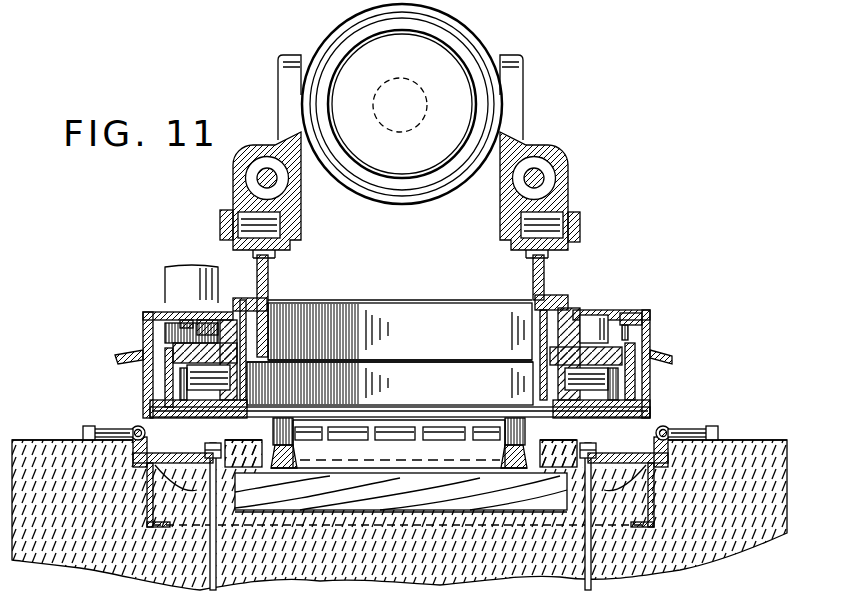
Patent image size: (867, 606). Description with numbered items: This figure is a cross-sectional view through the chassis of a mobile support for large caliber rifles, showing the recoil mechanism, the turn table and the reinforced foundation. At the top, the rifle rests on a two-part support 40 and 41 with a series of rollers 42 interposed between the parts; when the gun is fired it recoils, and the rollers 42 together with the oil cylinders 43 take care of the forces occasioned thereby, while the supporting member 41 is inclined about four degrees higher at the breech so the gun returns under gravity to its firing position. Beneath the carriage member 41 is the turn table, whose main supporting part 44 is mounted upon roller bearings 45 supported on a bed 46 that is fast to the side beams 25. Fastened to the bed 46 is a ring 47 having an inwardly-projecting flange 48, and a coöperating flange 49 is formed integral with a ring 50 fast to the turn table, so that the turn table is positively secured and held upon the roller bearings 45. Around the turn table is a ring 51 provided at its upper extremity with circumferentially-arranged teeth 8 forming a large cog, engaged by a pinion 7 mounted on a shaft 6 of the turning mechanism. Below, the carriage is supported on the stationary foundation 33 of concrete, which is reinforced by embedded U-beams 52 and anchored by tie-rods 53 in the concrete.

The shaft 6 is at (187, 322).
The pinion 7 is at (145, 330).
The teeth 8 is at (650, 327).
The side beams 25 is at (150, 370).
The stationary foundation 33 is at (738, 453).
The two-part support (upper part) 40 is at (565, 182).
The supporting member 41 is at (547, 281).
The rollers 42 is at (580, 227).
The oil cylinders 43 is at (545, 172).
The main supporting part of turn table 44 is at (582, 350).
The roller bearings 45 is at (203, 372).
The bed 46 is at (150, 415).
The ring 47 is at (565, 380).
The inwardly-projecting flange 48 is at (532, 335).
The coöperating flange 49 is at (533, 370).
The ring 50 is at (400, 352).
The ring 51 is at (643, 383).
The U-beams 52 is at (194, 460).
The tie-rods 53 is at (637, 456).